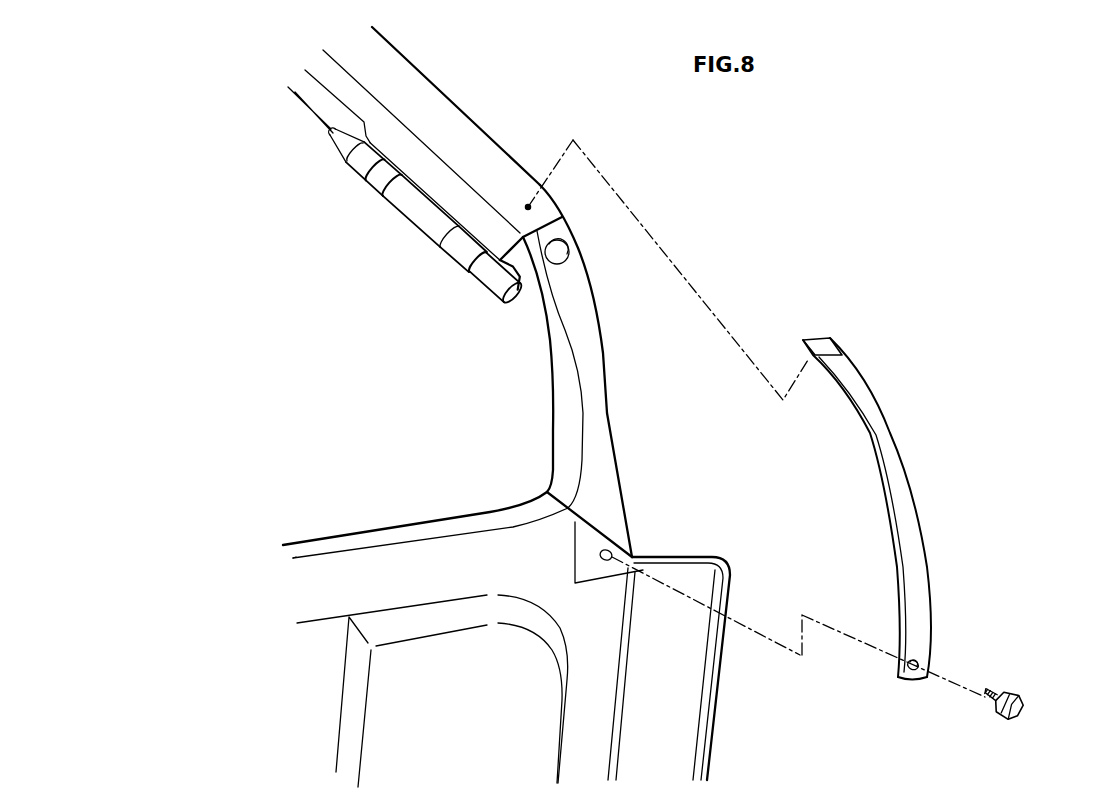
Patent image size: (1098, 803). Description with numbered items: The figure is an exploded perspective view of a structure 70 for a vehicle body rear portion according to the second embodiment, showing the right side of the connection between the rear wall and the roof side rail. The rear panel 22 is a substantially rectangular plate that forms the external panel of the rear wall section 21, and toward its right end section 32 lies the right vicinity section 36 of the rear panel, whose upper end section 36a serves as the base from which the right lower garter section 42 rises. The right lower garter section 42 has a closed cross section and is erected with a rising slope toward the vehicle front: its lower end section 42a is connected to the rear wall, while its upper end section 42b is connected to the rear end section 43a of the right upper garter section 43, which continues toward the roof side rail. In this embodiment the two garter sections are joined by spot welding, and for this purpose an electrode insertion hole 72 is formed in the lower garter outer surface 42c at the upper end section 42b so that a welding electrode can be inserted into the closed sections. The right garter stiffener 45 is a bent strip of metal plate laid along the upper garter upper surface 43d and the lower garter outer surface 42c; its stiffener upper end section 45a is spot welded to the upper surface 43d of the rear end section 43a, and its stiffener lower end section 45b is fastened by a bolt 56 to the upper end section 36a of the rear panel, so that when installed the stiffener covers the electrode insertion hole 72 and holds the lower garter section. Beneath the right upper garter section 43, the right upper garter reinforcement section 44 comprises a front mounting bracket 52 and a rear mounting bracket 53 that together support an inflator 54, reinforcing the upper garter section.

The right upper garter section 43 is at (425, 62).
The upper garter upper surface 43d is at (444, 121).
The upper garter rear end section 43a is at (547, 207).
The upper end section of right lower garter section 42b is at (563, 228).
The electrode insertion hole 72 is at (570, 255).
The right lower garter section 42 is at (607, 365).
The lower garter outer surface 42c is at (582, 337).
The lower end section of right lower garter section 42a is at (612, 528).
The structure for a vehicle body rear portion 70 is at (808, 197).
The rear panel 22 is at (382, 582).
The rear wall section 21 is at (244, 655).
The upper end section of right vicinity section 36a is at (600, 567).
The right vicinity section of the rear panel 36 is at (600, 733).
The right end section 32 is at (678, 740).
The right garter stiffener 45 is at (908, 486).
The stiffener upper end section 45a is at (827, 343).
The stiffener lower end section 45b is at (923, 652).
The bolt 56 is at (993, 698).
The right upper garter reinforcement section 44 is at (404, 197).
The front mounting bracket 52 is at (373, 182).
The inflator 54 is at (417, 215).
The rear mounting bracket 53 is at (466, 275).